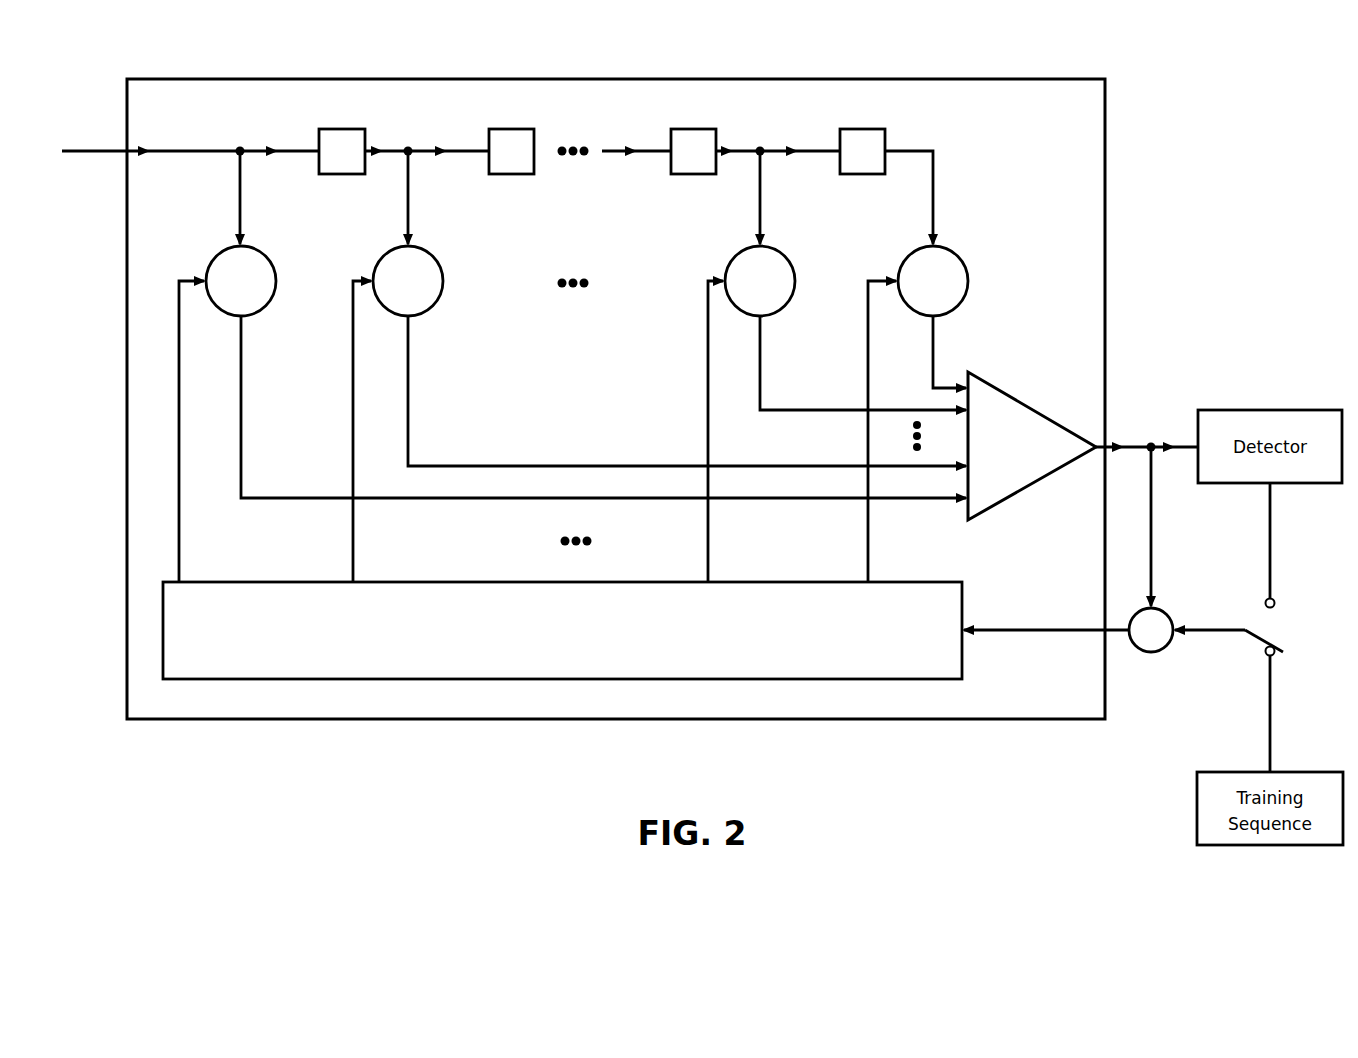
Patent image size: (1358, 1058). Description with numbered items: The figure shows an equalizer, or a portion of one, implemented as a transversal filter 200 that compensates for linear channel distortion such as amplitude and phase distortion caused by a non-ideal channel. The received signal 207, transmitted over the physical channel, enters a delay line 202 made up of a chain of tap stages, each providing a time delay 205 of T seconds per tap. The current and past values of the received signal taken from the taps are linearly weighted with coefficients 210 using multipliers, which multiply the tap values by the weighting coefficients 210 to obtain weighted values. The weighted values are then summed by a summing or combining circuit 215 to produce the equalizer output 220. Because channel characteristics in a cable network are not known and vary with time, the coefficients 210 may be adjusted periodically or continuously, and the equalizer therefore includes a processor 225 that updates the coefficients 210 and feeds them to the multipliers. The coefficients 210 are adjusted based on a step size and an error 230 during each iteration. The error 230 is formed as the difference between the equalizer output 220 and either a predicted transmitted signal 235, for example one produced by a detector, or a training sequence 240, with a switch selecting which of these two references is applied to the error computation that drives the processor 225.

The transversal filter 200 is at (1121, 166).
The delay line 202 is at (931, 140).
The time delay 205 is at (342, 129).
The received signal 207 is at (96, 150).
The weighting coefficients 210 is at (266, 256).
The summing circuit 215 is at (1017, 397).
The equalizer output 220 is at (1125, 443).
The processor 225 is at (945, 582).
The error 230 is at (1126, 637).
The predicted transmitted signal 235 is at (1272, 537).
The training sequence 240 is at (1272, 714).